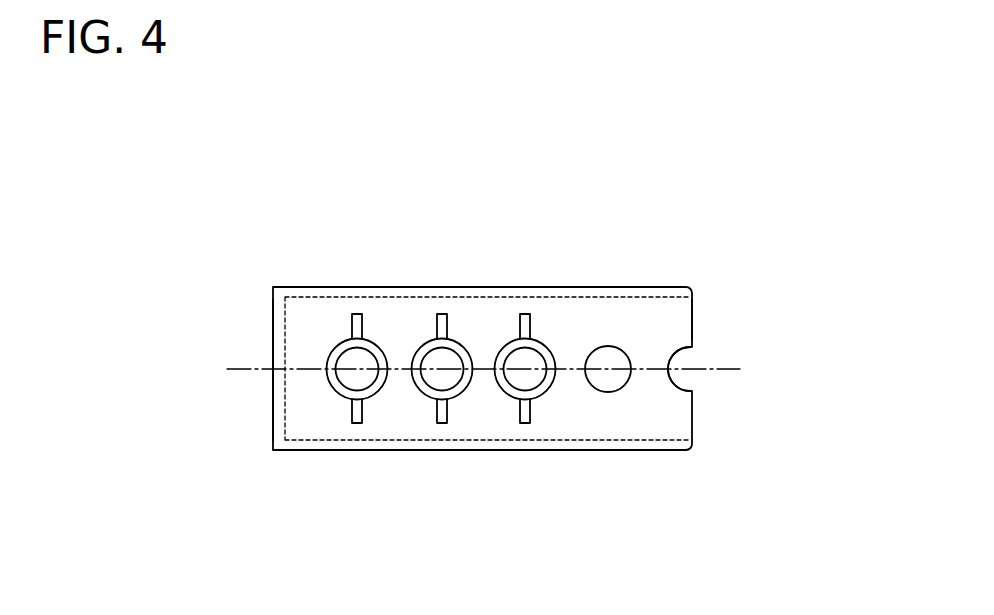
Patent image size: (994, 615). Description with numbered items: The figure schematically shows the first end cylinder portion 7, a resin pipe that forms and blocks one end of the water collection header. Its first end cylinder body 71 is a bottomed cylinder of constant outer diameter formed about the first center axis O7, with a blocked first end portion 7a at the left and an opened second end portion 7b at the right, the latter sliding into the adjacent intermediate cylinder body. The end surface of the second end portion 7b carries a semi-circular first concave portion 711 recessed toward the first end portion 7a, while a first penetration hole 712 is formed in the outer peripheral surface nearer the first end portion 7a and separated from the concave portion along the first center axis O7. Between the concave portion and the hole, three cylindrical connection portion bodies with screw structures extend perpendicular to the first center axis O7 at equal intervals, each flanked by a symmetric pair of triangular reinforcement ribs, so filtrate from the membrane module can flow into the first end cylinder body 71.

The first end cylinder portion 7 is at (711, 190).
The first end cylinder body 71 is at (610, 286).
The first concave portion 711 is at (688, 379).
The first penetration hole 712 is at (600, 386).
The first end portion 7a is at (273, 342).
The second end portion 7b is at (692, 328).
The first center axis O7 is at (713, 370).